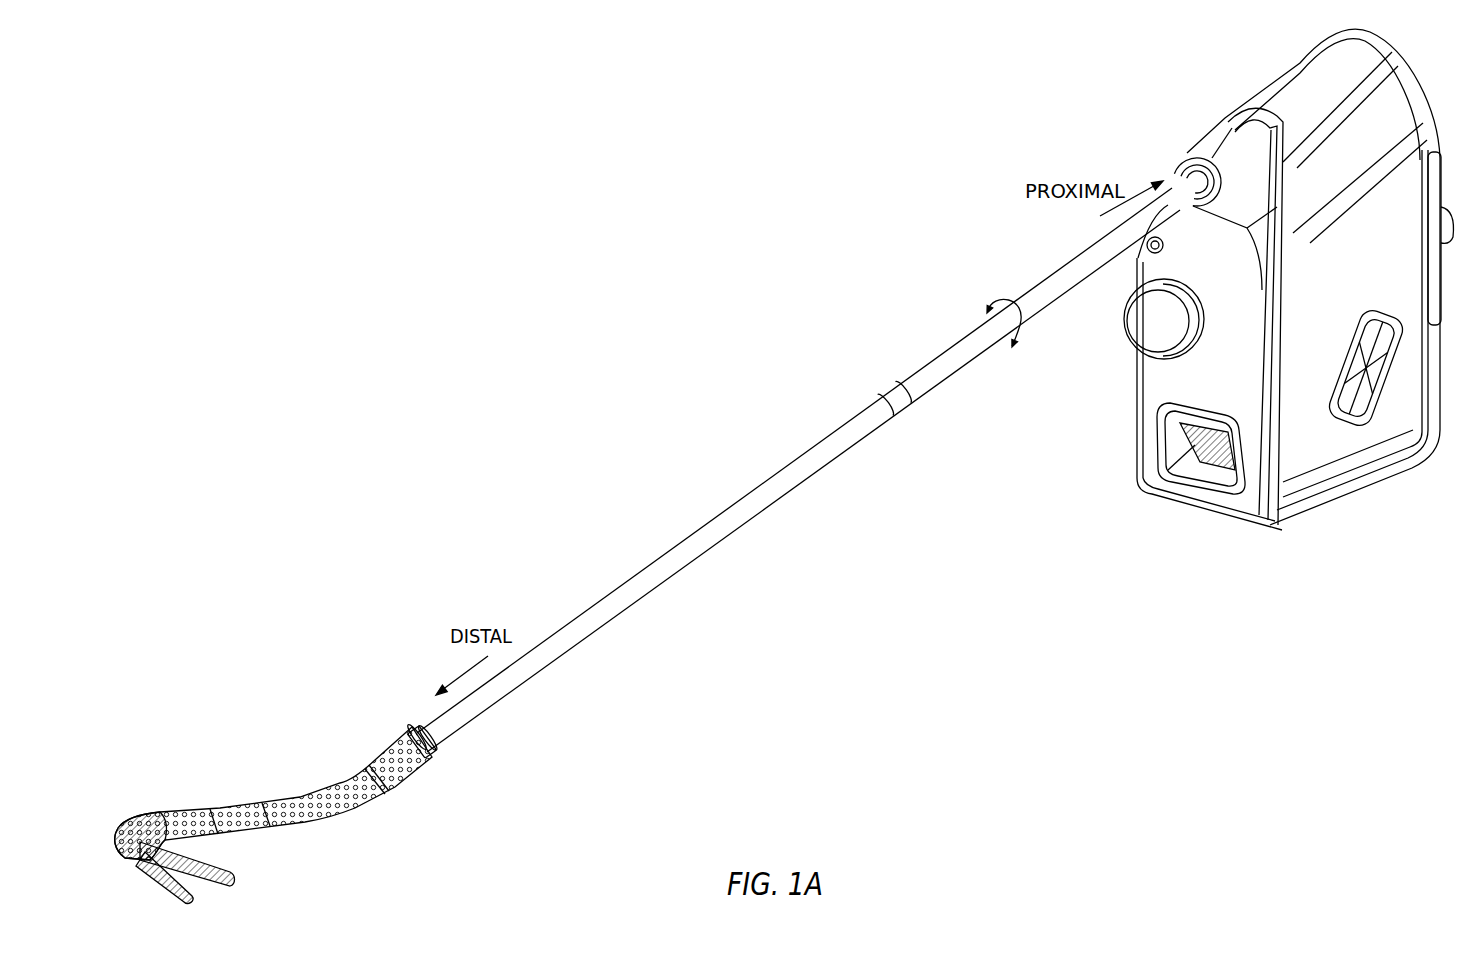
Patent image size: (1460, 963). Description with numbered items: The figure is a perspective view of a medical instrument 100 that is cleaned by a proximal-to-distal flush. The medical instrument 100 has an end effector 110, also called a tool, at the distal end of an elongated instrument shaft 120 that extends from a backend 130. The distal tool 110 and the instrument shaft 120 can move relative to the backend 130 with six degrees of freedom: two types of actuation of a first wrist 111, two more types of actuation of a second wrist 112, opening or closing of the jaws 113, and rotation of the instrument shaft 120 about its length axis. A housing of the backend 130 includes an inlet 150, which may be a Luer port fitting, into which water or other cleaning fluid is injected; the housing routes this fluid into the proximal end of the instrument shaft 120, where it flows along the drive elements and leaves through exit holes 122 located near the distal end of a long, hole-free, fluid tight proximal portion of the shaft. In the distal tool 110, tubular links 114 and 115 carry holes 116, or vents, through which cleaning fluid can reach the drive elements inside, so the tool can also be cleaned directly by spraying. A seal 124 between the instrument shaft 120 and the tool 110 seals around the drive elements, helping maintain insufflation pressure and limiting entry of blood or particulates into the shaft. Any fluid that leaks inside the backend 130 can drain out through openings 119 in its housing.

The medical instrument 100 is at (838, 142).
The end effector 110 is at (209, 759).
The first wrist 111 is at (332, 790).
The second wrist 112 is at (120, 835).
The jaws 113 is at (225, 866).
The tubular link 114 is at (378, 780).
The tubular link 115 is at (217, 800).
The holes 116 is at (263, 800).
The openings 119 is at (1205, 478).
The instrument shaft 120 is at (1036, 290).
The exit holes 122 is at (428, 752).
The seal 124 is at (404, 738).
The backend 130 is at (1366, 311).
The inlet 150 is at (1146, 254).